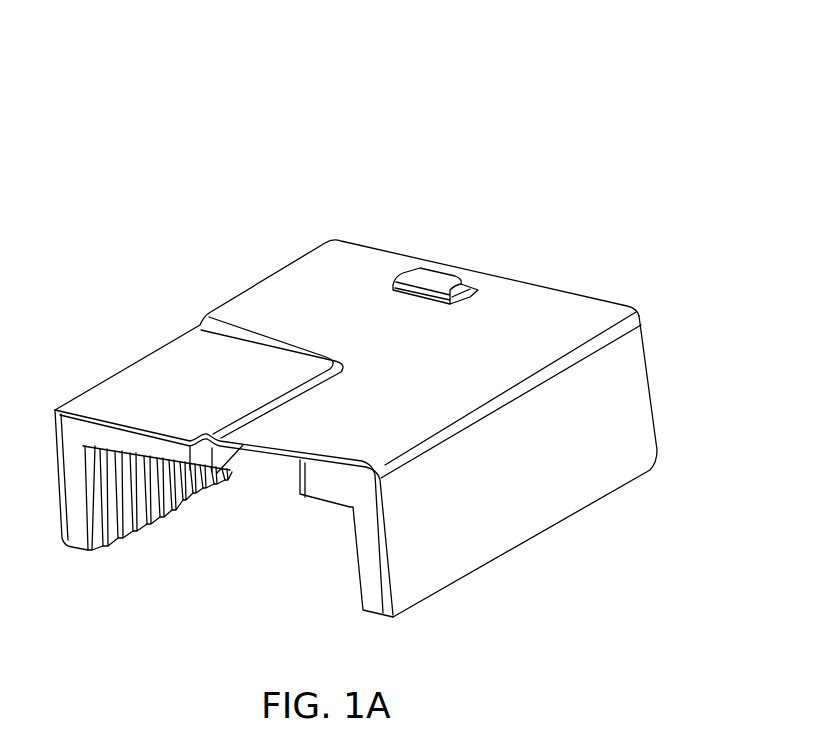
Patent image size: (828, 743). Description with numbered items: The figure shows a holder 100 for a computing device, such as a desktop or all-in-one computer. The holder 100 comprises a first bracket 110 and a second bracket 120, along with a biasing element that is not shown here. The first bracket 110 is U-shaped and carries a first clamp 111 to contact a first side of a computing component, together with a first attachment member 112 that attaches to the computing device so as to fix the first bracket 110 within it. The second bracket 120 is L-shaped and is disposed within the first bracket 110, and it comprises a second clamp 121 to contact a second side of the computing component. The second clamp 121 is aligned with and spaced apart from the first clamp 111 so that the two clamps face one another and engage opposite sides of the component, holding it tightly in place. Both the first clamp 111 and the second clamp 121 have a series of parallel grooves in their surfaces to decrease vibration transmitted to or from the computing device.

The holder 100 is at (363, 206).
The first bracket 110 is at (290, 290).
The first clamp 111 is at (153, 503).
The first attachment member 112 is at (447, 272).
The second bracket 120 is at (380, 483).
The second clamp 121 is at (363, 508).